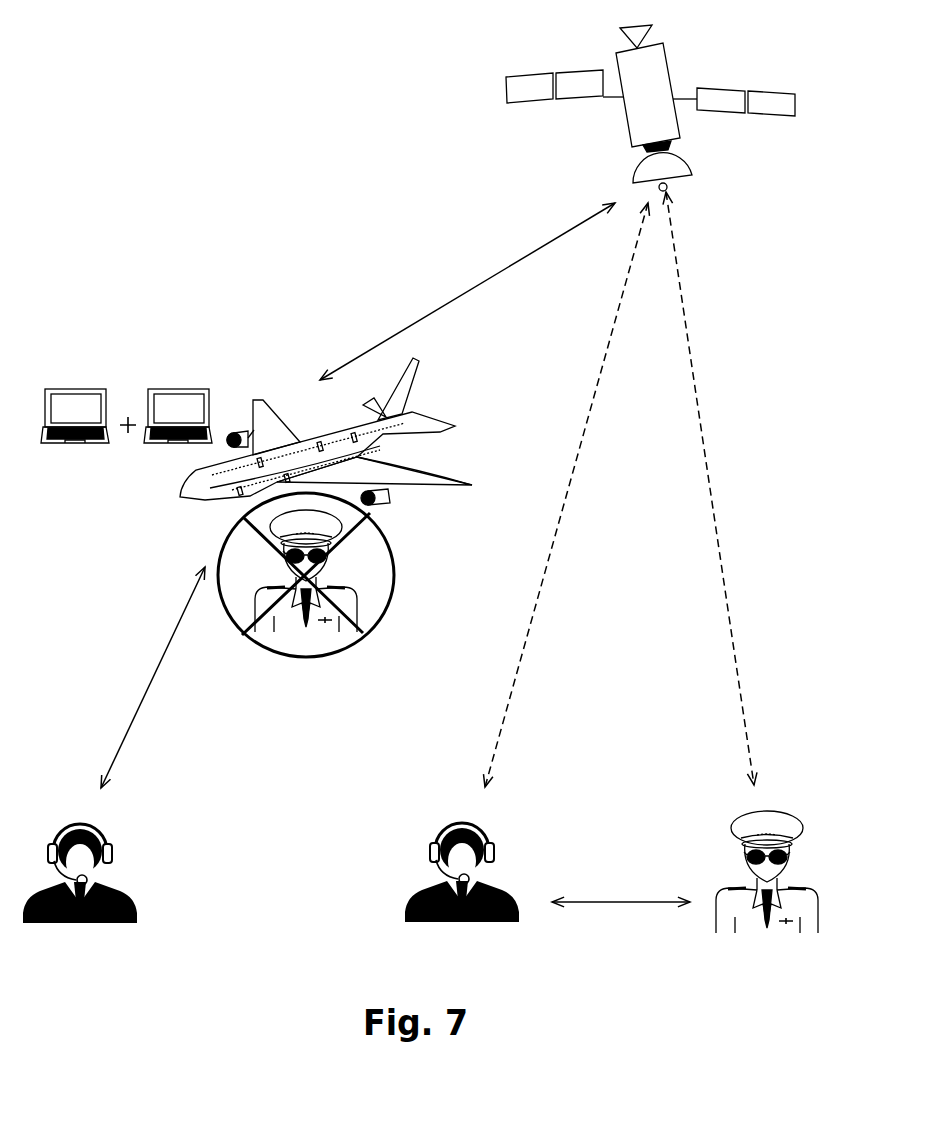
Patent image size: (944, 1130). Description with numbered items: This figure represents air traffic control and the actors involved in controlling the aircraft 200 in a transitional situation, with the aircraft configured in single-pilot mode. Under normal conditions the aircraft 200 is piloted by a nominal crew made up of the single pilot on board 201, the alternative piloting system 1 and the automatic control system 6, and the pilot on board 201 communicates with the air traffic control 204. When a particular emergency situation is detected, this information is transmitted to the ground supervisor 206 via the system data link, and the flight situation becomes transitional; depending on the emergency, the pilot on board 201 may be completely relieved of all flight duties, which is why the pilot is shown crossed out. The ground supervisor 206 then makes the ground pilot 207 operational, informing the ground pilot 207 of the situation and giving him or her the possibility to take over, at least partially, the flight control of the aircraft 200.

The alternative piloting system 1 is at (78, 400).
The automatic control system 6 is at (185, 400).
The aircraft 200 is at (317, 437).
The pilot on board 201 is at (360, 596).
The air traffic control 204 is at (132, 899).
The ground supervisor 206 is at (505, 892).
The ground pilot 207 is at (818, 898).